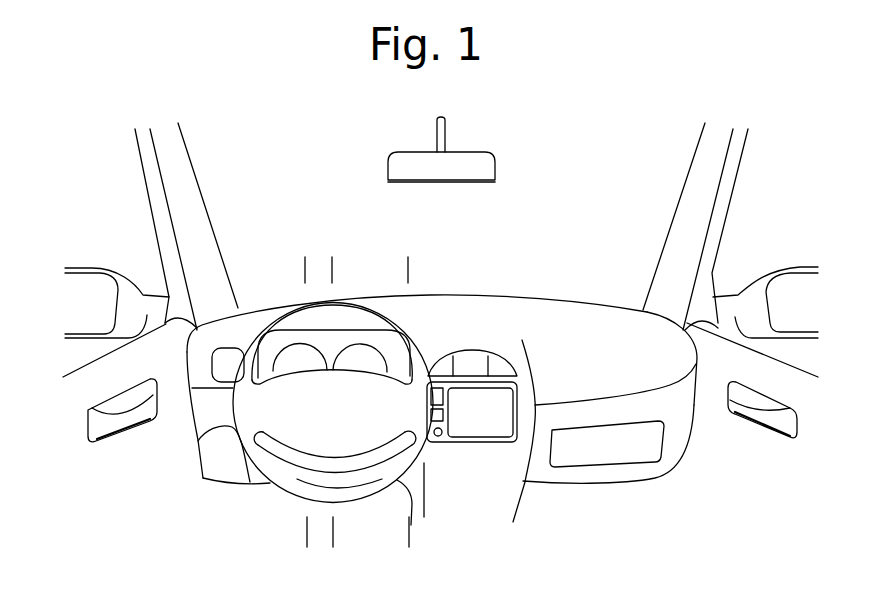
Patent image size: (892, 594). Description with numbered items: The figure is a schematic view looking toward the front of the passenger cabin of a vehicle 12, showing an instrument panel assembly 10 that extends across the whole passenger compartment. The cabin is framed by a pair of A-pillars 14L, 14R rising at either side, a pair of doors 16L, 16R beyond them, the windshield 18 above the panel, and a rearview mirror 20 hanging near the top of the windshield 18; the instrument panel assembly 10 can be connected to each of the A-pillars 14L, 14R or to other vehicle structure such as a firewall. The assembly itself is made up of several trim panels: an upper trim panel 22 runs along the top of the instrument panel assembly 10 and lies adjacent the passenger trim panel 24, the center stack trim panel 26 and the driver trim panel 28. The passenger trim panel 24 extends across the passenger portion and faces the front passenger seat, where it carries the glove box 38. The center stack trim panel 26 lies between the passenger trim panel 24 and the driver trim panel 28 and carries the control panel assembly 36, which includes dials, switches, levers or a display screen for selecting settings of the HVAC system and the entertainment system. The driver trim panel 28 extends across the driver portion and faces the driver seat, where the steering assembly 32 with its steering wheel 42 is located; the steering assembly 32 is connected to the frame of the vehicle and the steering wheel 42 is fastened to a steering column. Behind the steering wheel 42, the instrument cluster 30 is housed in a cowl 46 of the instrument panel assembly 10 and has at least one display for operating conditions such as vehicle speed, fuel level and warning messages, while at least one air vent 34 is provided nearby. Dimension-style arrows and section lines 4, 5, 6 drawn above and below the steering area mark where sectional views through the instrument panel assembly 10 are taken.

The instrument panel assembly 10 is at (513, 278).
The vehicle 12 is at (252, 157).
The left A-pillar 14L is at (150, 188).
The right A-pillar 14R is at (733, 188).
The left door 16L is at (90, 366).
The right door 16R is at (792, 364).
The windshield 18 is at (309, 183).
The rearview mirror 20 is at (497, 168).
The upper trim panel 22 is at (577, 296).
The passenger trim panel 24 is at (675, 470).
The center stack trim panel 26 is at (515, 507).
The driver trim panel 28 is at (202, 476).
The instrument cluster 30 is at (362, 372).
The steering assembly 32 is at (253, 495).
The air vent 34 is at (475, 365).
The control panel assembly 36 is at (452, 443).
The glove box 38 is at (603, 457).
The steering wheel 42 is at (198, 442).
The cowl 46 is at (340, 331).
The section line for FIG. 4 is at (297, 272).
The section line for FIG. 5 is at (416, 272).
The section line for FIG. 6 is at (340, 272).